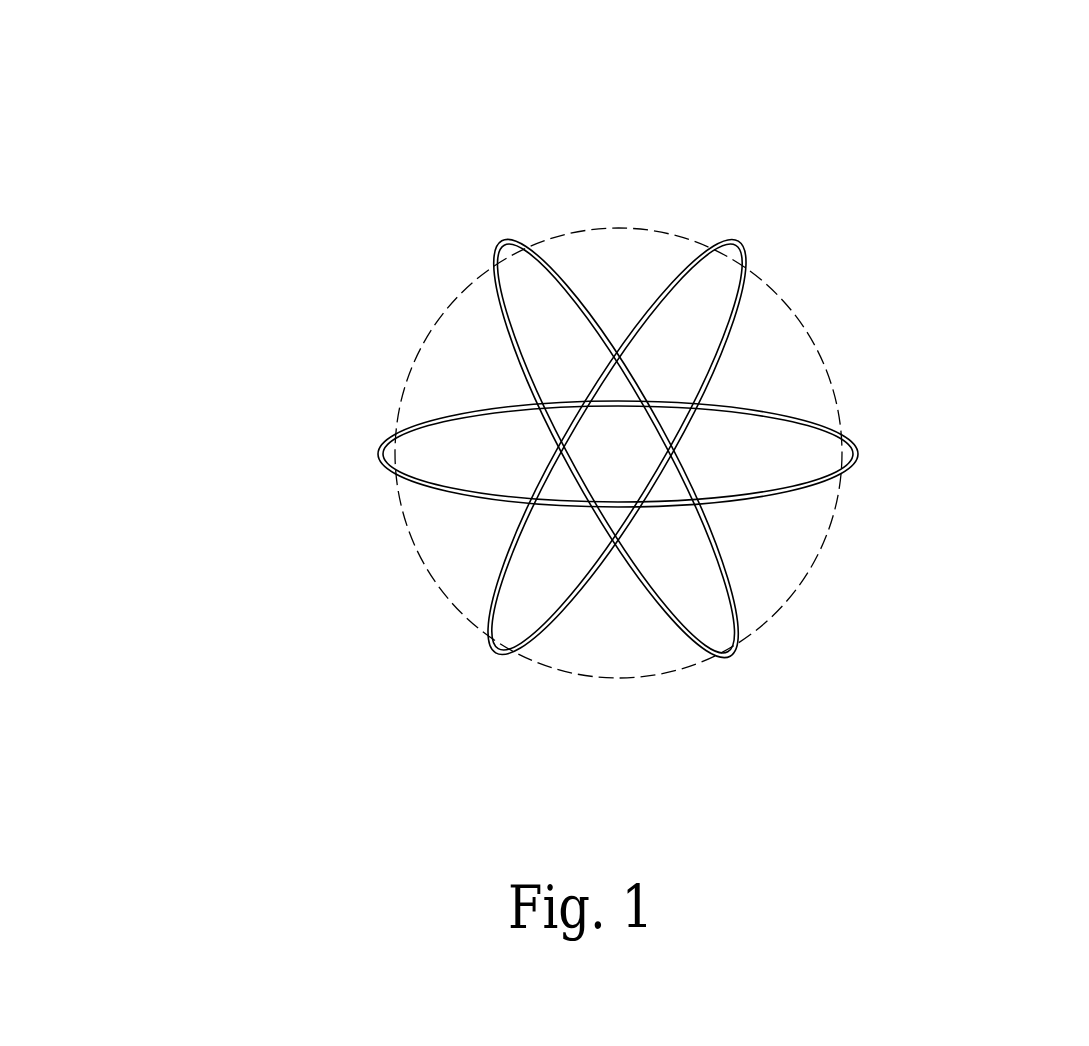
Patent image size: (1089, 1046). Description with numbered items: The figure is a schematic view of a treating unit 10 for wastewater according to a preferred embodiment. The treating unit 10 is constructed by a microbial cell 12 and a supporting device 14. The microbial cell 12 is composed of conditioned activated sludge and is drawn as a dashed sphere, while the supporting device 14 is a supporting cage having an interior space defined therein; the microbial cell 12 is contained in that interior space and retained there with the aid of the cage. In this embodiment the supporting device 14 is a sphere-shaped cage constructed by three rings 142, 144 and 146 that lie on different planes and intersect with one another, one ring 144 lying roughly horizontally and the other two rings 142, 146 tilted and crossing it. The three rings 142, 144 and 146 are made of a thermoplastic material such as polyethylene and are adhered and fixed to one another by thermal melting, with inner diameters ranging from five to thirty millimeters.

The treating unit 10 is at (284, 180).
The microbial cell 12 is at (618, 680).
The supporting device 14 is at (994, 184).
The ring 142 is at (740, 658).
The ring 144 is at (858, 454).
The ring 146 is at (738, 242).